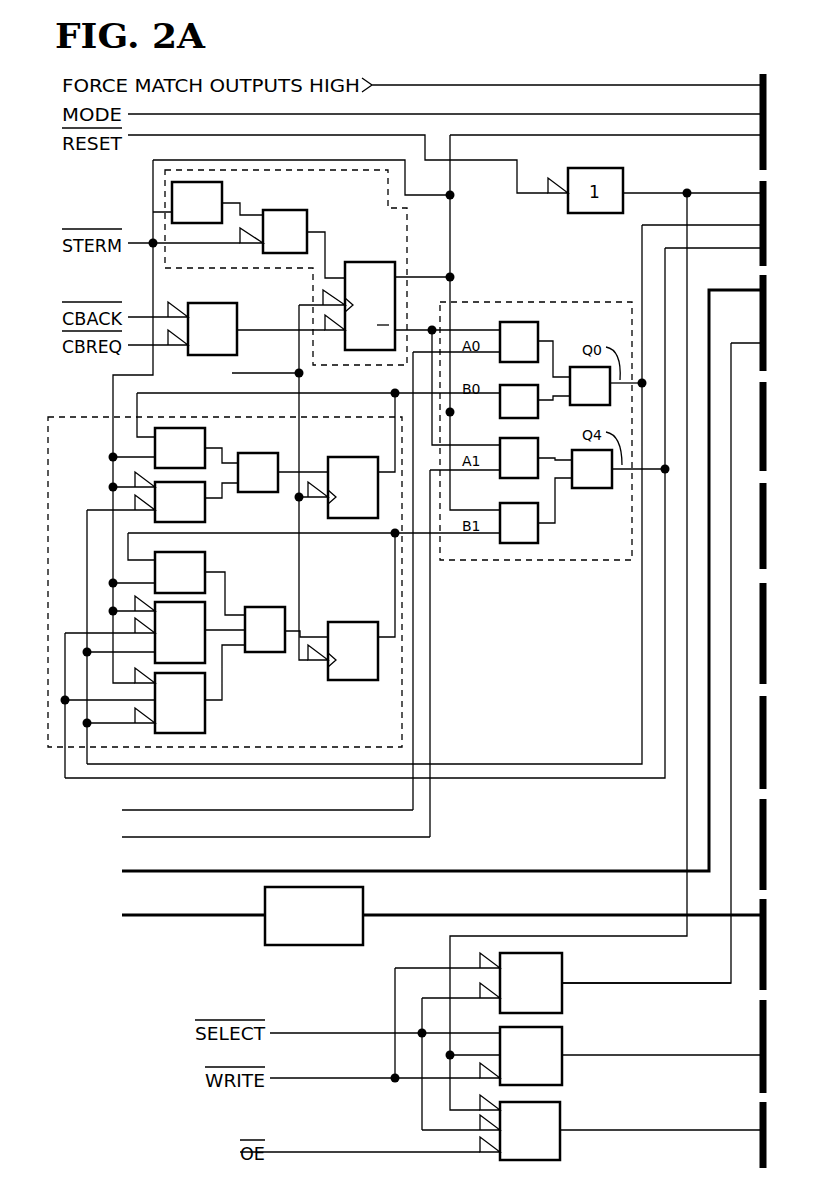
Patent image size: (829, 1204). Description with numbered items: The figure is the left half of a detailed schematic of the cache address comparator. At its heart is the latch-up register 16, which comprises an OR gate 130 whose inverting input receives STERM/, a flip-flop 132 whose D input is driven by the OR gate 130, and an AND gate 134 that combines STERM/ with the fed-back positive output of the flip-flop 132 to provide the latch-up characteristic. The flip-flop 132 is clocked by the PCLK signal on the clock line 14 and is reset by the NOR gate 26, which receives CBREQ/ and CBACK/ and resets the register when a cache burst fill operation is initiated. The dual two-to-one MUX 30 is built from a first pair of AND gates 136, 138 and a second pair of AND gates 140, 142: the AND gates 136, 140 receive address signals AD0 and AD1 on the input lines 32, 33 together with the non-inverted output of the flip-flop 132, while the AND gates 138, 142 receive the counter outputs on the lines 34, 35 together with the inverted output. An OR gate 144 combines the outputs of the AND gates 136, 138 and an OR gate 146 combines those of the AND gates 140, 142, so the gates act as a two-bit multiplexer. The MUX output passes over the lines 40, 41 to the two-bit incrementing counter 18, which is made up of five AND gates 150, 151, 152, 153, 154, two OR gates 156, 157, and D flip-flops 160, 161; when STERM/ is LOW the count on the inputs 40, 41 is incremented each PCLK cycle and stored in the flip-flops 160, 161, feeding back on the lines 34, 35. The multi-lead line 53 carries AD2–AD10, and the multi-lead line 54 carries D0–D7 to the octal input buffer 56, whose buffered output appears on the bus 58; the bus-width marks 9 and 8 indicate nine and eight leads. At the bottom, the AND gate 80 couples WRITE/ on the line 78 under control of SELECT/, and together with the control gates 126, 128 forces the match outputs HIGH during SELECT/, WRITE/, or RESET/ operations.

The latch-up register 16 is at (153, 210).
The NOR gate 26 is at (215, 303).
The clock line 14 is at (240, 373).
The AND gate 134 is at (205, 182).
The OR gate 130 is at (280, 207).
The flip-flop 132 is at (407, 262).
The AND gate 136 is at (520, 322).
The AND gate 138 is at (510, 418).
The AND gate 140 is at (510, 478).
The AND gate 142 is at (510, 543).
The OR gate 144 is at (597, 405).
The OR gate 146 is at (598, 488).
The dual 2-to-1 MUX 30 is at (560, 562).
The input line 34 is at (392, 393).
The input line 35 is at (375, 540).
The AND gate 154 is at (205, 433).
The OR gate 157 is at (250, 455).
The AND gate 153 is at (205, 517).
The AND gate 152 is at (205, 553).
The AND gate 151 is at (207, 607).
The OR gate 156 is at (277, 653).
The AND gate 150 is at (210, 725).
The D flip-flop 161 is at (365, 520).
The D flip-flop 160 is at (345, 682).
The two-bit incrementing counter 18 is at (420, 692).
The input 41 is at (470, 762).
The input 40 is at (545, 778).
The input line 32 is at (135, 805).
The input line 33 is at (135, 840).
The multi-lead line 53 is at (135, 873).
The multi-lead line 54 is at (135, 915).
The octal input buffer 56 is at (290, 945).
The buffered data bus 58 is at (400, 912).
The AND gate 80 is at (562, 968).
The line 78 is at (650, 943).
The control gate 126 is at (562, 1042).
The control gate 128 is at (560, 1116).
The bus width indicator 9 is at (742, 283).
The bus width indicator 8 is at (240, 907).